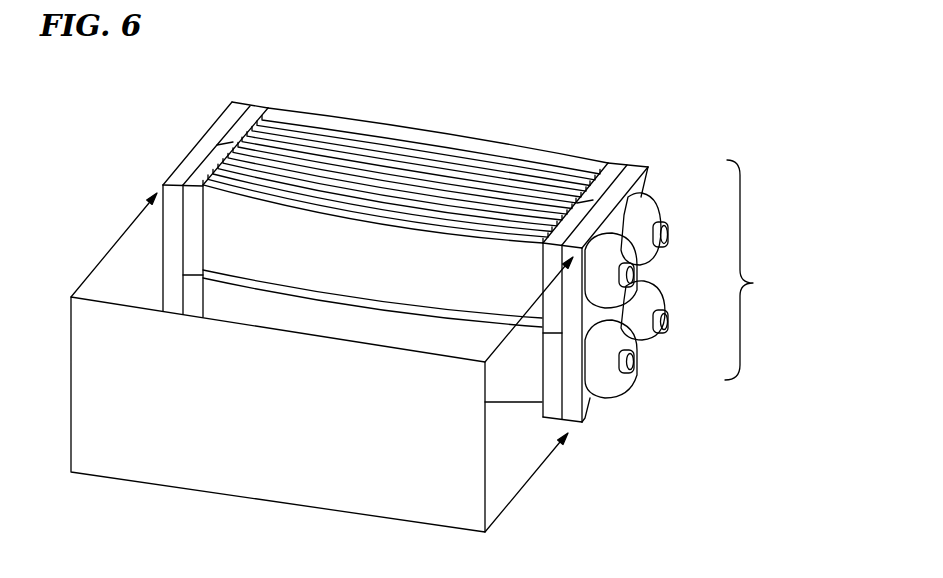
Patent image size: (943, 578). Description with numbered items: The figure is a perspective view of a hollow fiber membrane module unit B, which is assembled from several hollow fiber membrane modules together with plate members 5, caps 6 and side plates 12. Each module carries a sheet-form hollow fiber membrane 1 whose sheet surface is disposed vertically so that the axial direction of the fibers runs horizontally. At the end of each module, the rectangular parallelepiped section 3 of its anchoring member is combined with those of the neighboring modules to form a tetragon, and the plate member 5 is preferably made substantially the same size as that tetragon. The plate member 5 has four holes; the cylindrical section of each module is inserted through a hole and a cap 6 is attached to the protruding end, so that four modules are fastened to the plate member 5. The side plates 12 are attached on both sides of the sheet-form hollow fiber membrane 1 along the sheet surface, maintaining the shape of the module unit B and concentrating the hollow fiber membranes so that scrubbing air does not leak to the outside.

The sheet-form hollow fiber membrane 1 is at (352, 140).
The rectangular parallelepiped section 3 is at (618, 162).
The plate member 5 is at (163, 184).
The cap 6 is at (653, 210).
The side plate 12 is at (437, 132).
The hollow fiber membrane module unit B is at (773, 295).